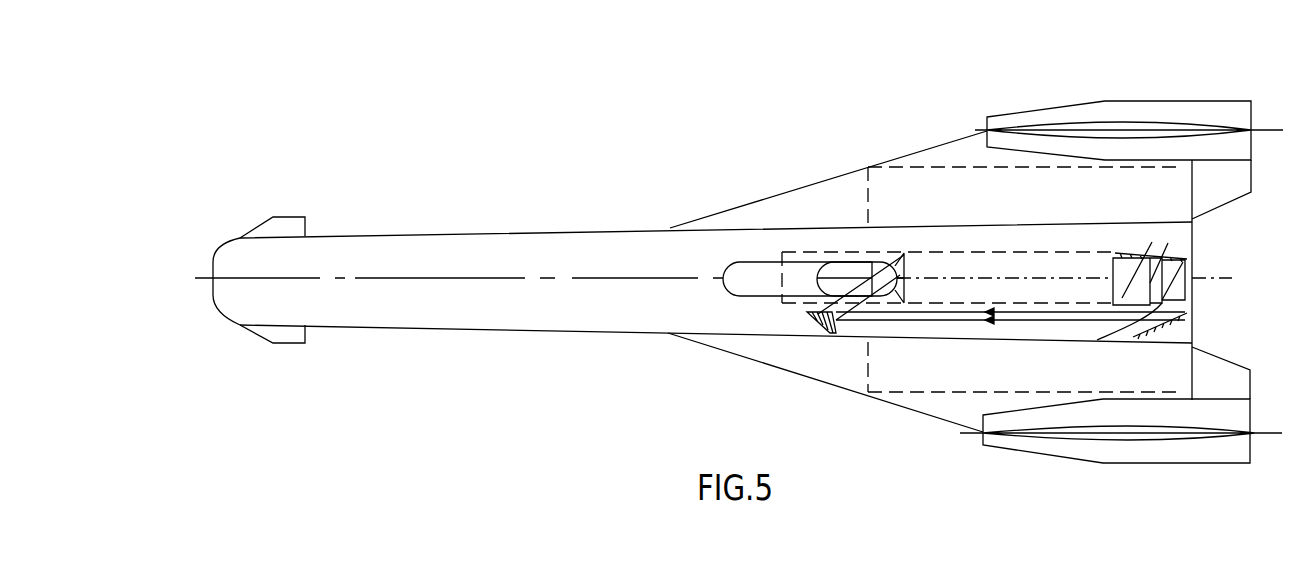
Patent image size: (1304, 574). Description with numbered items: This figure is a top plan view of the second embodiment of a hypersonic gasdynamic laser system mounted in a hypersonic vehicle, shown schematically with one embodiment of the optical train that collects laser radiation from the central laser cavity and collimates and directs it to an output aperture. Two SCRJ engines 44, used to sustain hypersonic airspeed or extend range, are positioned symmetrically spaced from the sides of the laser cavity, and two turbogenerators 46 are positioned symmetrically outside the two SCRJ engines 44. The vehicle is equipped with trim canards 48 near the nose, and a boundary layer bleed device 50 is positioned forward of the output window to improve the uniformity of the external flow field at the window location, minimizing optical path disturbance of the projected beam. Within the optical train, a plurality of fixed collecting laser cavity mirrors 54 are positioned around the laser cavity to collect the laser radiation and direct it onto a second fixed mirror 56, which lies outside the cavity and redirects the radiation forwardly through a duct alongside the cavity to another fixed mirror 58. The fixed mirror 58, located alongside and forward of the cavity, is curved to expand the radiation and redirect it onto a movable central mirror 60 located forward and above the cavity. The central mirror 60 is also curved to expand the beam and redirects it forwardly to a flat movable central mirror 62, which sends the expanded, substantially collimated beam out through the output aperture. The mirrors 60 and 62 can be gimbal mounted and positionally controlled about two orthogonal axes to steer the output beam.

The SCRJ engine 44 is at (1076, 204).
The turbogenerator 46 is at (1213, 101).
The trim canard 48 is at (305, 232).
The boundary layer bleed device 50 is at (745, 300).
The fixed collecting laser cavity mirror 54 is at (1160, 262).
The second fixed mirror 56 is at (1183, 318).
The fixed mirror 58 is at (813, 322).
The movable central mirror 60 is at (905, 256).
The flat movable central mirror 62 is at (843, 262).